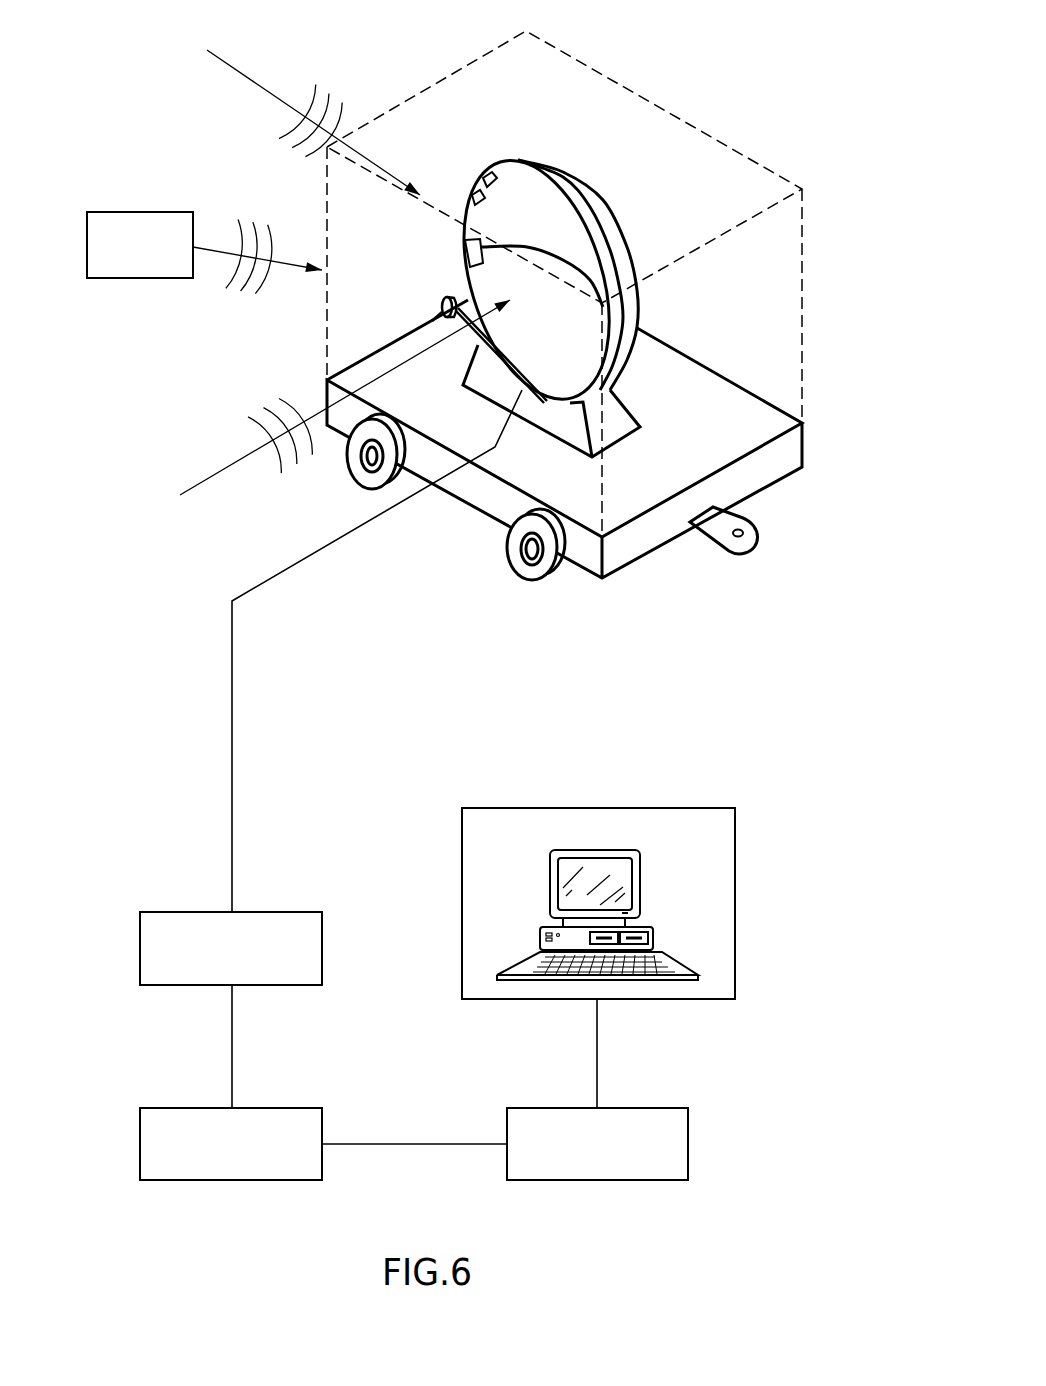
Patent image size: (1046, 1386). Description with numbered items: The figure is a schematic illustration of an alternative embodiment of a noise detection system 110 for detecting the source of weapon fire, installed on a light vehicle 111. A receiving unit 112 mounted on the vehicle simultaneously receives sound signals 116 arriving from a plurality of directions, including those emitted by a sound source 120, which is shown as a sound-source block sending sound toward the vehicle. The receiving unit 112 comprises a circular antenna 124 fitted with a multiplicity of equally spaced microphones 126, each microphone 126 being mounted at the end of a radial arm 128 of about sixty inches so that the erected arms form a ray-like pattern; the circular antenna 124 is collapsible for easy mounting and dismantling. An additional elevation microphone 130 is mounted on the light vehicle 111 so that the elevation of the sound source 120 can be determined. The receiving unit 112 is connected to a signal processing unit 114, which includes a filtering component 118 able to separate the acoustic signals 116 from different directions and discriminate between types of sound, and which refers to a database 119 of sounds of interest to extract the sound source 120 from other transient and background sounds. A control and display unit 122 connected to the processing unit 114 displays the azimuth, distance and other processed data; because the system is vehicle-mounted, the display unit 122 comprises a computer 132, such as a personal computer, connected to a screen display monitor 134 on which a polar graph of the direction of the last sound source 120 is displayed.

The noise detection system 110 is at (722, 75).
The light vehicle 111 is at (753, 480).
The receiving unit 112 is at (466, 287).
The signal processing unit 114 is at (140, 955).
The sound signals 116 is at (247, 78).
The filtering component 118 is at (140, 1147).
The database 119 is at (688, 1135).
The sound source 120 is at (157, 212).
The control and display unit 122 is at (735, 943).
The circular antenna 124 is at (623, 308).
The microphones 126 is at (475, 195).
The radial arm 128 is at (466, 264).
The elevation microphone 130 is at (442, 303).
The computer 132 is at (540, 940).
The screen display monitor 134 is at (550, 873).